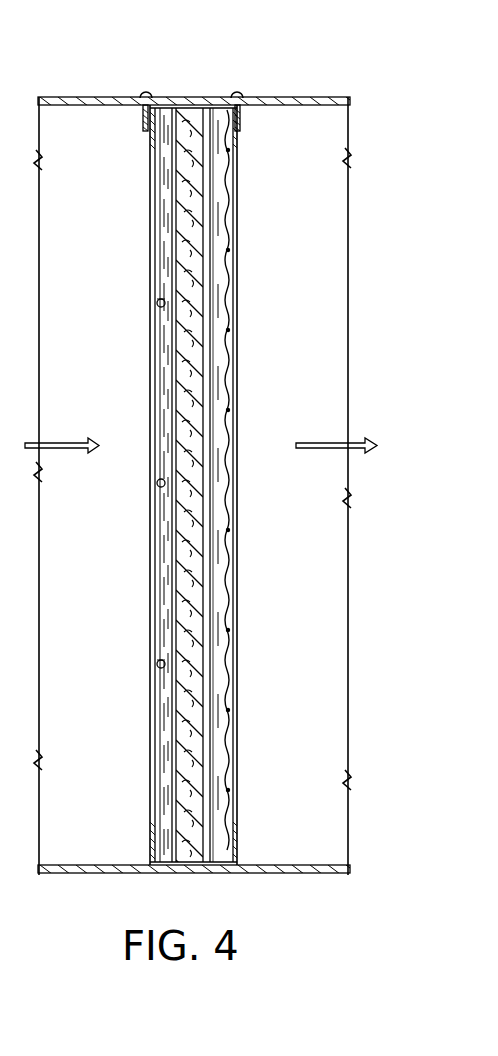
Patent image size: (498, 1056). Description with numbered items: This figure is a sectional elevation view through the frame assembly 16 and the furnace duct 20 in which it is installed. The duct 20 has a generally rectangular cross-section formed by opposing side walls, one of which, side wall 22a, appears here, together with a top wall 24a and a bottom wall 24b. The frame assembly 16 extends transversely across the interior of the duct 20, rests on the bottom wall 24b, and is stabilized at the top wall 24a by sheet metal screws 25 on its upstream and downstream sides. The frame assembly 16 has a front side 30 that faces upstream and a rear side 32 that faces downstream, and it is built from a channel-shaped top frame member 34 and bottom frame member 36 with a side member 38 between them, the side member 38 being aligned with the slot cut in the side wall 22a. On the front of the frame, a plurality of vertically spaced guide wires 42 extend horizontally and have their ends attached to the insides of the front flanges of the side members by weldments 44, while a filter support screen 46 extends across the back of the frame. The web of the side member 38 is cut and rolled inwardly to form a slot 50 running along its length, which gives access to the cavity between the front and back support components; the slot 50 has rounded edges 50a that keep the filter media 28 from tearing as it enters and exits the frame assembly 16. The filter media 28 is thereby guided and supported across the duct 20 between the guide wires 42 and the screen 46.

The frame assembly 16 is at (176, 96).
The furnace duct 20 is at (328, 95).
The side wall 22a is at (342, 577).
The top wall 24a is at (278, 98).
The bottom wall 24b is at (305, 871).
The sheet metal screws 25 is at (142, 96).
The filter media 28 is at (196, 312).
The front side 30 is at (147, 347).
The rear side 32 is at (240, 364).
The top frame member 34 is at (202, 107).
The bottom frame member 36 is at (205, 866).
The side member 38 is at (237, 537).
The guide wires 42 is at (156, 301).
The weldments 44 is at (158, 298).
The filter support screen 46 is at (230, 667).
The slot 50 is at (178, 222).
The rounded edges 50a is at (212, 250).